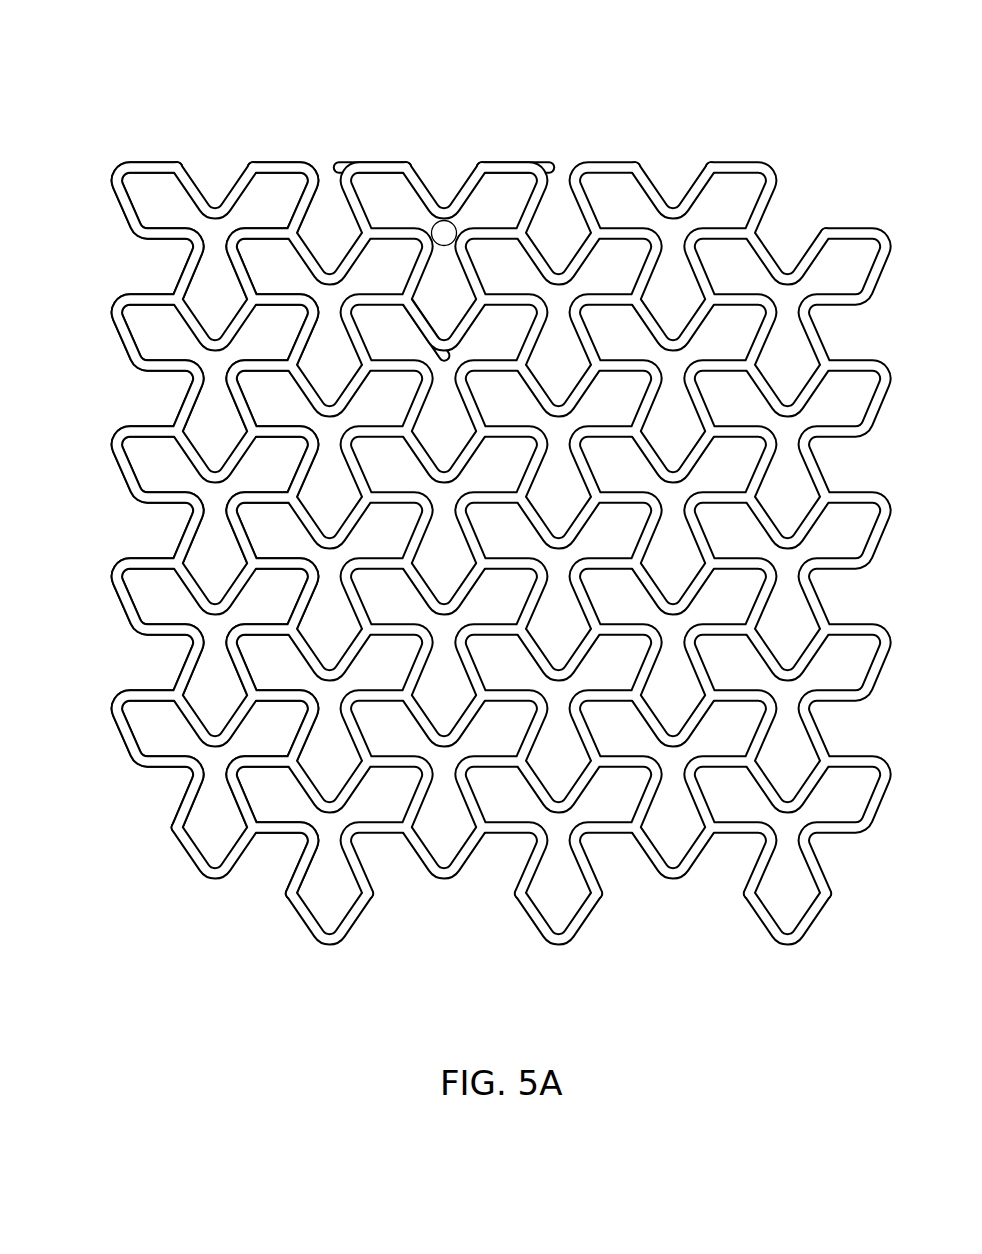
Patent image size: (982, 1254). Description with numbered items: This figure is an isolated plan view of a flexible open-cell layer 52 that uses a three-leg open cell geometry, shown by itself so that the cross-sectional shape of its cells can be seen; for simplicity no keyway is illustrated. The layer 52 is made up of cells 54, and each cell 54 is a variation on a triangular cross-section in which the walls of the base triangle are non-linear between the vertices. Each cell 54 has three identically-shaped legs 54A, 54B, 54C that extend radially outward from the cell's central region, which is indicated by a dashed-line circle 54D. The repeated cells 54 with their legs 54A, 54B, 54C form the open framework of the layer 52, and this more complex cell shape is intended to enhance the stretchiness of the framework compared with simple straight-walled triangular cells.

The flexible open-cell layer 52 is at (143, 82).
The cell 54 is at (334, 139).
The leg 54A is at (367, 160).
The leg 54B is at (525, 160).
The leg 54C is at (422, 323).
The dashed-line circle 54D is at (456, 227).